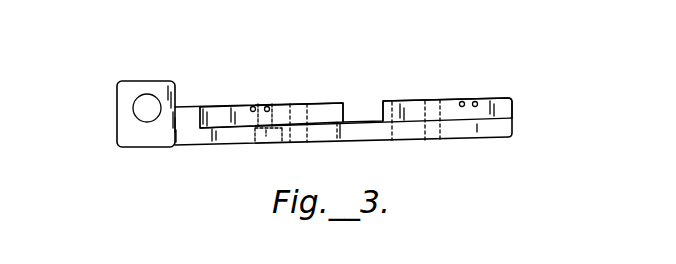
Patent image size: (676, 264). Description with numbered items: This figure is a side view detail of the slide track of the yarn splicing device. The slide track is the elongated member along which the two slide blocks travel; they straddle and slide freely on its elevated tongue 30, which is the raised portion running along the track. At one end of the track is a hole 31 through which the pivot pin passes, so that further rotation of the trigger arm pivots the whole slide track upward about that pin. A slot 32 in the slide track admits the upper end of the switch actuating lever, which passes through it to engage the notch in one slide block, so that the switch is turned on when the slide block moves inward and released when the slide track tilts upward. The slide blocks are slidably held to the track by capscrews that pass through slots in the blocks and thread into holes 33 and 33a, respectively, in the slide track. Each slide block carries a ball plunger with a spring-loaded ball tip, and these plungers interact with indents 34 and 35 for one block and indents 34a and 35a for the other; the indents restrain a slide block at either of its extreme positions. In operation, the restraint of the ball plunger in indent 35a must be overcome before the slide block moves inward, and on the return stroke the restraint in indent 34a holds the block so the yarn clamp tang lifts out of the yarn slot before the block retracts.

The elevated tongue 30 is at (504, 98).
The hole 31 is at (137, 109).
The slot 32 is at (262, 145).
The hole 33 is at (302, 106).
The hole 33a is at (432, 101).
The indent 34 is at (267, 106).
The indent 35 is at (253, 106).
The indent 34a is at (462, 102).
The indent 35a is at (475, 102).